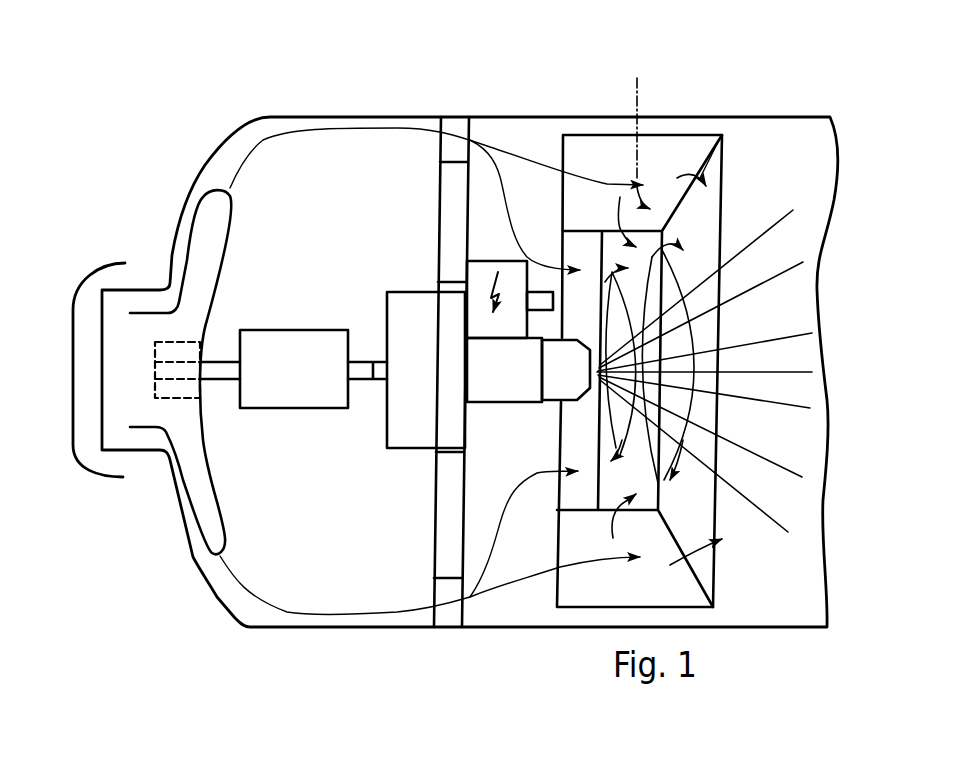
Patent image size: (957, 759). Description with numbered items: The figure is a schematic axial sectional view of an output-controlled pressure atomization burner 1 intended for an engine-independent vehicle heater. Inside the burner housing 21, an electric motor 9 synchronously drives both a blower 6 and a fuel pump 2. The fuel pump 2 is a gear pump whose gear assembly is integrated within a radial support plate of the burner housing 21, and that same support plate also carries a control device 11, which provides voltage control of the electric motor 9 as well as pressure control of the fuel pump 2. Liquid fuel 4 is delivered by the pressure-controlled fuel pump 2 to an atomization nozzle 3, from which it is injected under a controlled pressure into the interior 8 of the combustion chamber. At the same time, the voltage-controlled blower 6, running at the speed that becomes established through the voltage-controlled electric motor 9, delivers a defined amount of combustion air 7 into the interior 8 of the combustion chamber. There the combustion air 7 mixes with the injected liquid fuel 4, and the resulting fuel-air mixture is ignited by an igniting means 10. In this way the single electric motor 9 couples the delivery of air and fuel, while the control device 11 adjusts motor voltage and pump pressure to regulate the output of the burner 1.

The output-controlled pressure atomization burner 1 is at (212, 104).
The fuel pump 2 is at (395, 425).
The atomization nozzle 3 is at (570, 396).
The liquid fuel 4 is at (788, 372).
The blower 6 is at (203, 443).
The combustion air 7 is at (700, 176).
The interior of the combustion chamber 8 is at (770, 581).
The electric motor 9 is at (303, 395).
The igniting means 10 is at (483, 262).
The control device 11 is at (437, 500).
The burner housing 21 is at (305, 628).